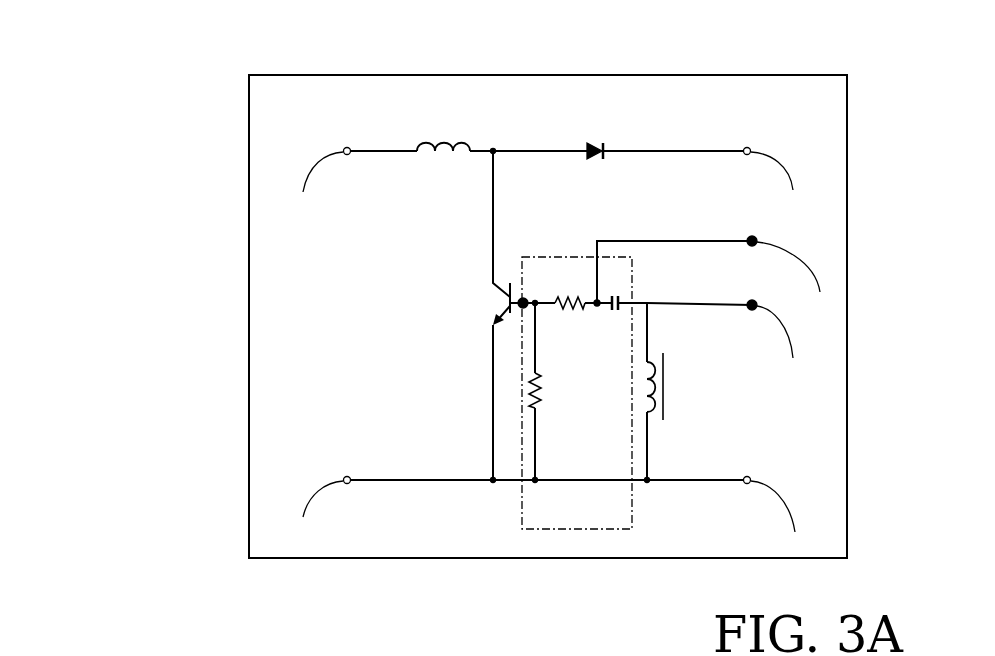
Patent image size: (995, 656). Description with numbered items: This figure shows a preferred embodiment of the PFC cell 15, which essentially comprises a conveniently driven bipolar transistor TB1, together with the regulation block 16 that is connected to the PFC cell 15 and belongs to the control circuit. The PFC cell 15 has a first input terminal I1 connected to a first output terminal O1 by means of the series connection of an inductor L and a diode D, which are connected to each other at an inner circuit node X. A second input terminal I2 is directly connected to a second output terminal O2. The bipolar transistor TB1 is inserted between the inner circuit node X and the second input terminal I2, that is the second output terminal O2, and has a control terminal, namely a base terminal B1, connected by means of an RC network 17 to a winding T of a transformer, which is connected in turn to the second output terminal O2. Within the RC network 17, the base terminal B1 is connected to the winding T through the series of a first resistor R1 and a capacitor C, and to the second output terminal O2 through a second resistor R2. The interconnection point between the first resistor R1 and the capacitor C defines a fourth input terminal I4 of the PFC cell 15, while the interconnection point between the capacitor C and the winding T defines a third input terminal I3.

The PFC cell 15 is at (170, 88).
The regulation block 16 is at (548, 361).
The RC network 17 is at (540, 503).
The inductor L is at (443, 129).
The diode D is at (592, 132).
The inner circuit node X is at (493, 151).
The bipolar transistor TB1 is at (468, 315).
The base terminal B1 is at (519, 305).
The first resistor R1 is at (561, 293).
The second resistor R2 is at (558, 393).
The capacitor C is at (622, 291).
The winding T is at (674, 393).
The first input terminal I1 is at (314, 192).
The second input terminal I2 is at (308, 512).
The third input terminal I3 is at (776, 351).
The fourth input terminal I4 is at (790, 279).
The first output terminal O1 is at (769, 192).
The second output terminal O2 is at (787, 512).